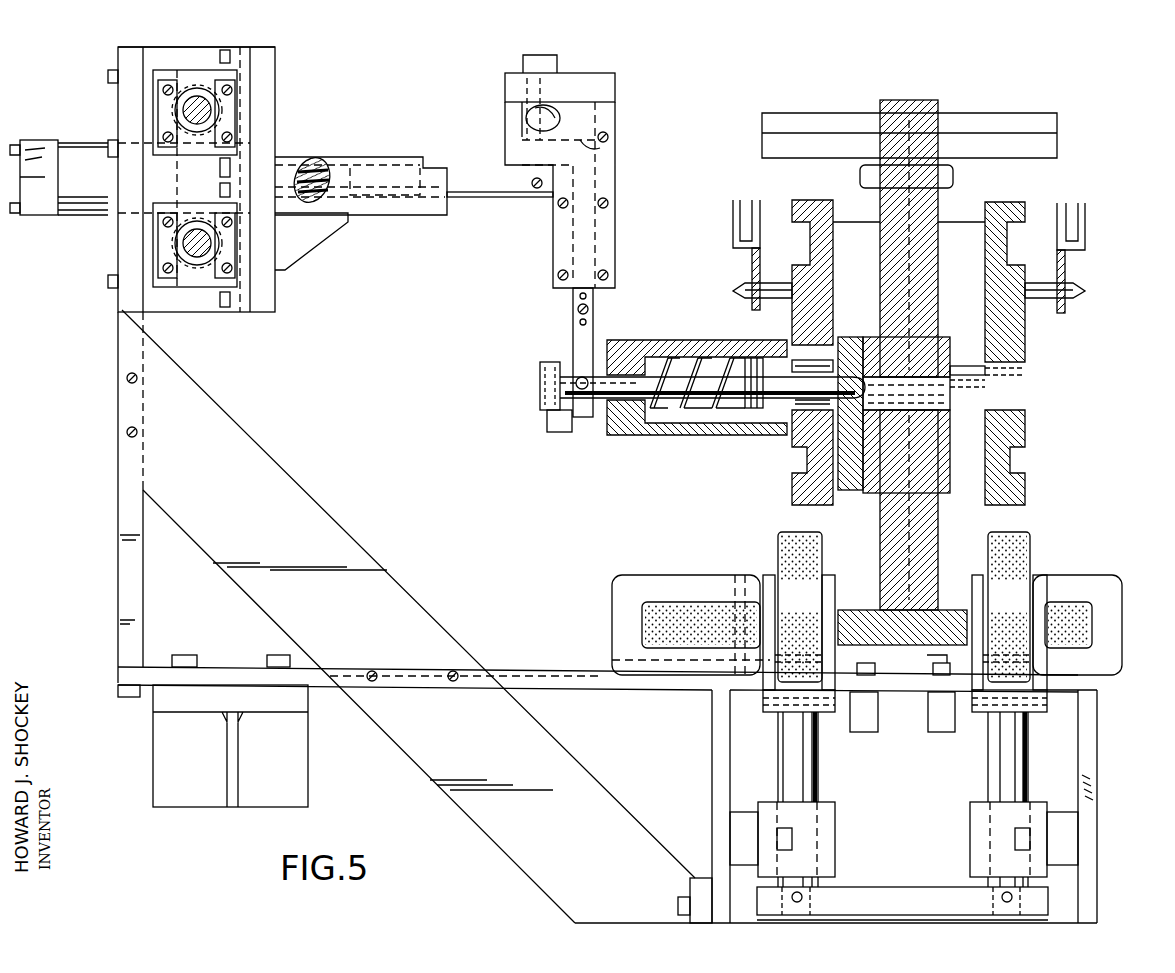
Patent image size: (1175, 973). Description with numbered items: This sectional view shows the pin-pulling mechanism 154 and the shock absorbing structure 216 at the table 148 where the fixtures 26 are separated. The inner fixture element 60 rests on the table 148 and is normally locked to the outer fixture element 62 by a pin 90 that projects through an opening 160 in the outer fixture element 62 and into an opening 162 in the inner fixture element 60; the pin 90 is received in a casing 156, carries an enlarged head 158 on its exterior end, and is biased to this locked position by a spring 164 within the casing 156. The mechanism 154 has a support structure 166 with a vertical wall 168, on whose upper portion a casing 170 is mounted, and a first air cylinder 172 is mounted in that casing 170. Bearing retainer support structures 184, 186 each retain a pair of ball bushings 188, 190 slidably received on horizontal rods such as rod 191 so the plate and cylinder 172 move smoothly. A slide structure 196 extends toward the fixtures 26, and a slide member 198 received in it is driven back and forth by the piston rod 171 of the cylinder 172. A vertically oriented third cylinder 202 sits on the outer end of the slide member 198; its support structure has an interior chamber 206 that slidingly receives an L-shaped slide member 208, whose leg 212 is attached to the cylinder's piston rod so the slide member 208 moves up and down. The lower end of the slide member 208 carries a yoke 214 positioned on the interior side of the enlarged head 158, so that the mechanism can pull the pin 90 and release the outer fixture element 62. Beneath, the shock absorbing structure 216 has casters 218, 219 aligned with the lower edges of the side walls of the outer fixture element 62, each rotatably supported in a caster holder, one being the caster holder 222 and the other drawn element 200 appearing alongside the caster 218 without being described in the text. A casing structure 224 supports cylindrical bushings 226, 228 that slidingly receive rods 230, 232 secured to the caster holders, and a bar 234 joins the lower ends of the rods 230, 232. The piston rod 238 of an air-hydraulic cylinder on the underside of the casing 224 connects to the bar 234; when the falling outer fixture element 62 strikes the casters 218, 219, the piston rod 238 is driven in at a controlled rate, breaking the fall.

The fixtures 26 is at (838, 164).
The inner fixture element 60 is at (880, 520).
The outer fixture element 62 is at (792, 480).
The pin 90 is at (543, 362).
The table 148 is at (524, 672).
The pulling mechanism 154 is at (98, 98).
The casing 156 is at (690, 340).
The enlarged head 158 is at (545, 413).
The opening in outer fixture element 160 is at (790, 442).
The opening in inner fixture element 162 is at (965, 383).
The spring 164 is at (668, 437).
The support structure 166 is at (272, 455).
The vertical wall 168 is at (118, 518).
The casing 170 is at (208, 314).
The piston rod 171 is at (320, 170).
The first air cylinder 172 is at (80, 214).
The bearing retainer support structure 184 is at (153, 117).
The bearing retainer support structure 186 is at (160, 247).
The ball bushing 188 is at (208, 78).
The ball bushing 190 is at (196, 285).
The rod 191 is at (218, 113).
The slide structure 196 is at (393, 216).
The slide member 198 is at (485, 197).
The yoke plate 200 is at (836, 578).
The third cylinder 202 is at (522, 60).
The interior chamber 206 is at (560, 128).
The L-shaped slide member 208 is at (595, 228).
The leg 212 is at (605, 152).
The yoke 214 is at (600, 325).
The shock absorbing structure 216 is at (768, 556).
The caster 218 is at (800, 532).
The caster 219 is at (1012, 535).
The caster holder 222 is at (975, 578).
The casing structure 224 is at (1095, 756).
The cylindrical bushing 226 is at (835, 822).
The cylindrical bushing 228 is at (975, 805).
The rod 230 is at (818, 760).
The rod 232 is at (990, 752).
The bar 234 is at (888, 888).
The piston rod 238 is at (905, 917).